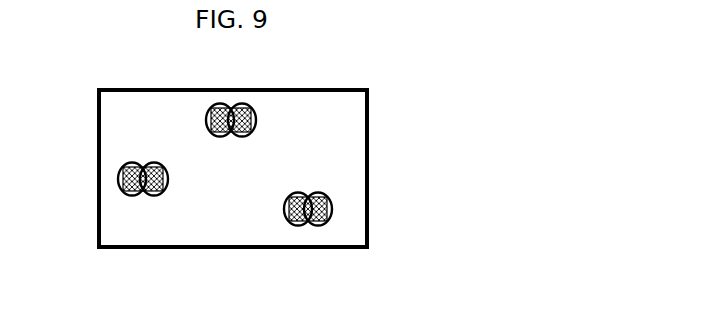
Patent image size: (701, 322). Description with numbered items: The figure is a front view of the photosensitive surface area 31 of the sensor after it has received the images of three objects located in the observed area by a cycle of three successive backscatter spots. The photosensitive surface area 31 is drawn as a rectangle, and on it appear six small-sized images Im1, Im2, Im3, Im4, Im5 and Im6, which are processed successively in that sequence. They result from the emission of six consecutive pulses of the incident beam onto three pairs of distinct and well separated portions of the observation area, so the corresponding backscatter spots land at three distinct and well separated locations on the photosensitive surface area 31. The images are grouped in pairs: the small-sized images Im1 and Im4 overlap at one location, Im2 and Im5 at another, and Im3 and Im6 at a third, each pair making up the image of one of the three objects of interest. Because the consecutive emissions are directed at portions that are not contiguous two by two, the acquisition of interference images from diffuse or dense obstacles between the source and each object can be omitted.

The photosensitive surface area 31 is at (101, 133).
The small-sized image Im1 is at (213, 104).
The small-sized image Im2 is at (295, 226).
The small-sized image Im3 is at (138, 196).
The small-sized image Im4 is at (251, 104).
The small-sized image Im5 is at (318, 226).
The small-sized image Im6 is at (152, 196).